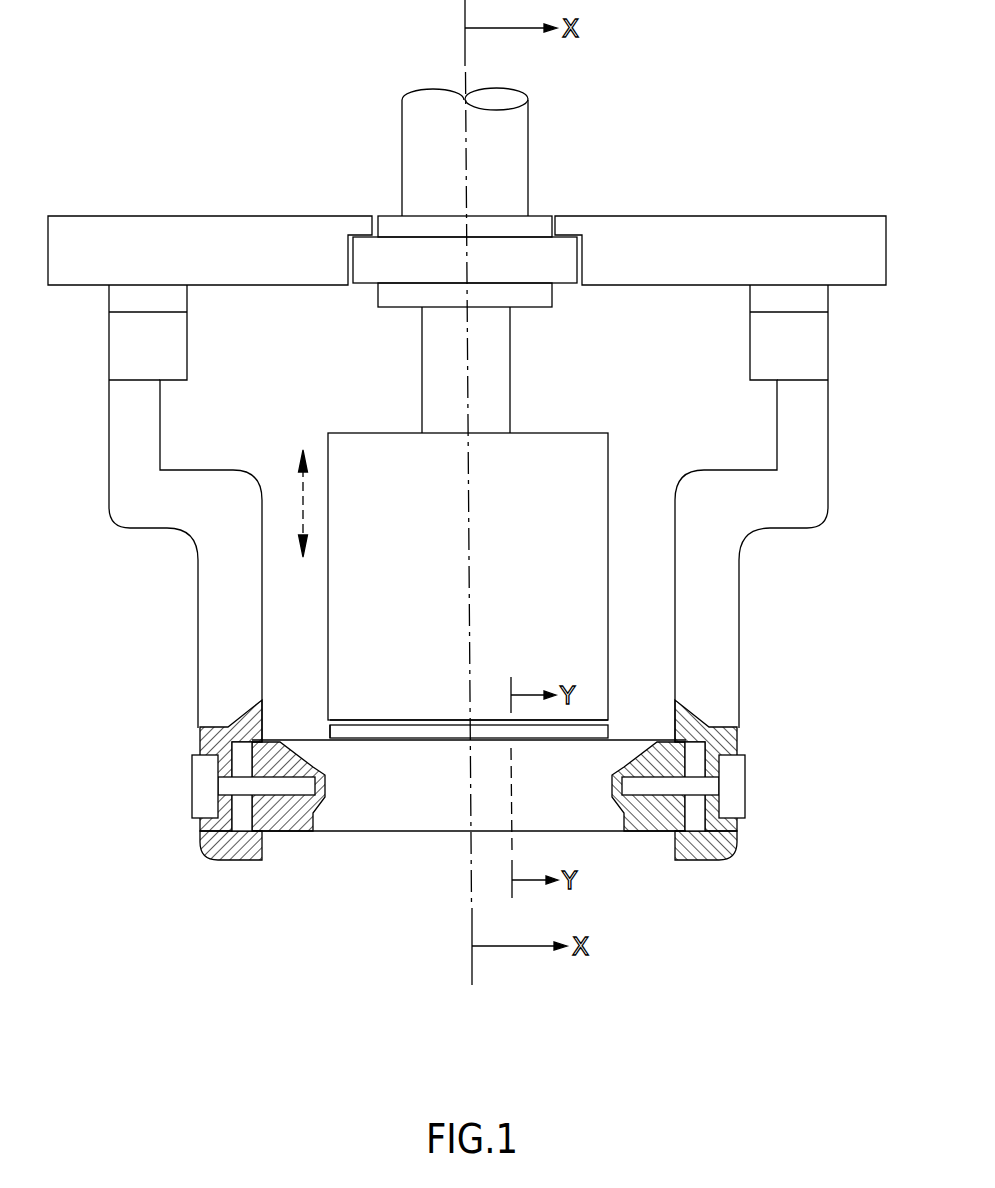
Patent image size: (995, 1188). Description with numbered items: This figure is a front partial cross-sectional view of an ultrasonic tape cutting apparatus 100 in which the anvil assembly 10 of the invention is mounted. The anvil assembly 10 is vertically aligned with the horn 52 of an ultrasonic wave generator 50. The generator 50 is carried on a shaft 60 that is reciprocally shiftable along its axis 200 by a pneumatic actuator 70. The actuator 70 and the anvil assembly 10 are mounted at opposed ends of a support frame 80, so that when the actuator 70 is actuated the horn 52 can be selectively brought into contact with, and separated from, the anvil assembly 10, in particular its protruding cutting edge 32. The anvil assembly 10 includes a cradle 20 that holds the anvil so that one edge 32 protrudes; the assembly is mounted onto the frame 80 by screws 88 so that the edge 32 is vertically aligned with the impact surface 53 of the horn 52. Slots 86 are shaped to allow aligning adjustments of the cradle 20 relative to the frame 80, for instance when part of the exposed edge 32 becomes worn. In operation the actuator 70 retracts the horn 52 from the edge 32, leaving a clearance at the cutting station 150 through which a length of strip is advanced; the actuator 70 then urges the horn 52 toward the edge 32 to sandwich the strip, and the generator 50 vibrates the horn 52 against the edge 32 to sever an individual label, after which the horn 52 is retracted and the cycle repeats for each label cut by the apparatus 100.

The ultrasonic tape cutting apparatus 100 is at (768, 182).
The pneumatic actuator 70 is at (514, 151).
The shaft 60 is at (500, 345).
The axis 200 is at (470, 389).
The ultrasonic wave generator 50 is at (597, 502).
The support frame 80 is at (802, 462).
The horn 52 is at (582, 670).
The impact surface 53 is at (372, 718).
The cutting station 150 is at (303, 718).
The cradle 20 is at (342, 822).
The cutting edge 32 is at (550, 722).
The slots 86 is at (208, 852).
The screws 88 is at (206, 787).
The anvil assembly 10 is at (396, 853).